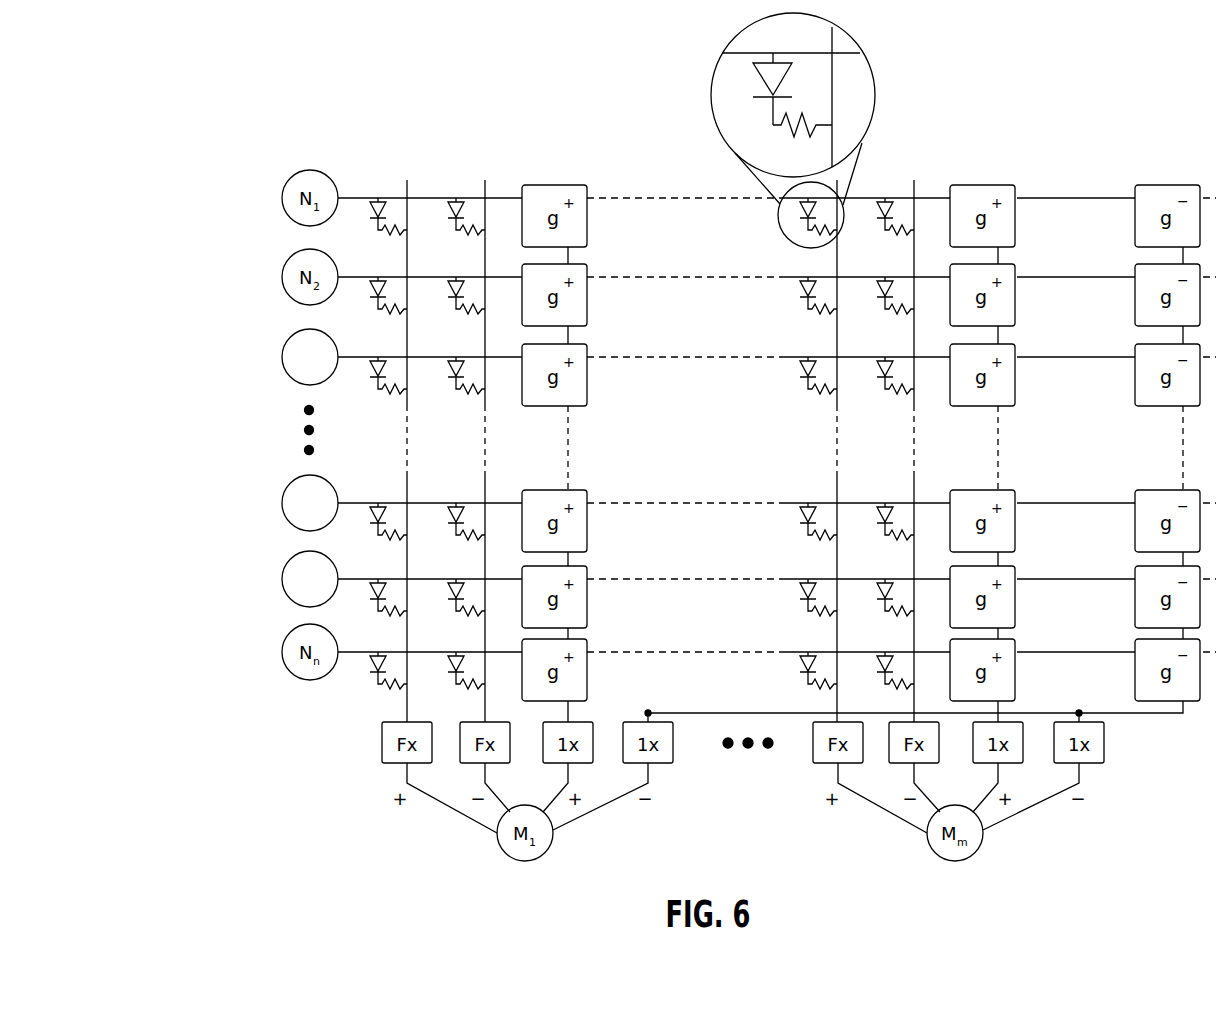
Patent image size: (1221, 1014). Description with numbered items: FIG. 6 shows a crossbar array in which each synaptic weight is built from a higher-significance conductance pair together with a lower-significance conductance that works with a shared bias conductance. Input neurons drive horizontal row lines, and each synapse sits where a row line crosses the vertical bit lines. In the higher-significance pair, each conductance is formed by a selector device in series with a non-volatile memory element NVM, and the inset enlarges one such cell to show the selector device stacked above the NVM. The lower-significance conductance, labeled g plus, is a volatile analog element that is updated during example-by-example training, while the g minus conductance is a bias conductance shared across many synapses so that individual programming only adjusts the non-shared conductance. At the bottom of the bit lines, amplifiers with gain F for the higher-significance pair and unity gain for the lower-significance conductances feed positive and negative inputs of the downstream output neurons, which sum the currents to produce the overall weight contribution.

The non-volatile memory element NVM is at (836, 107).